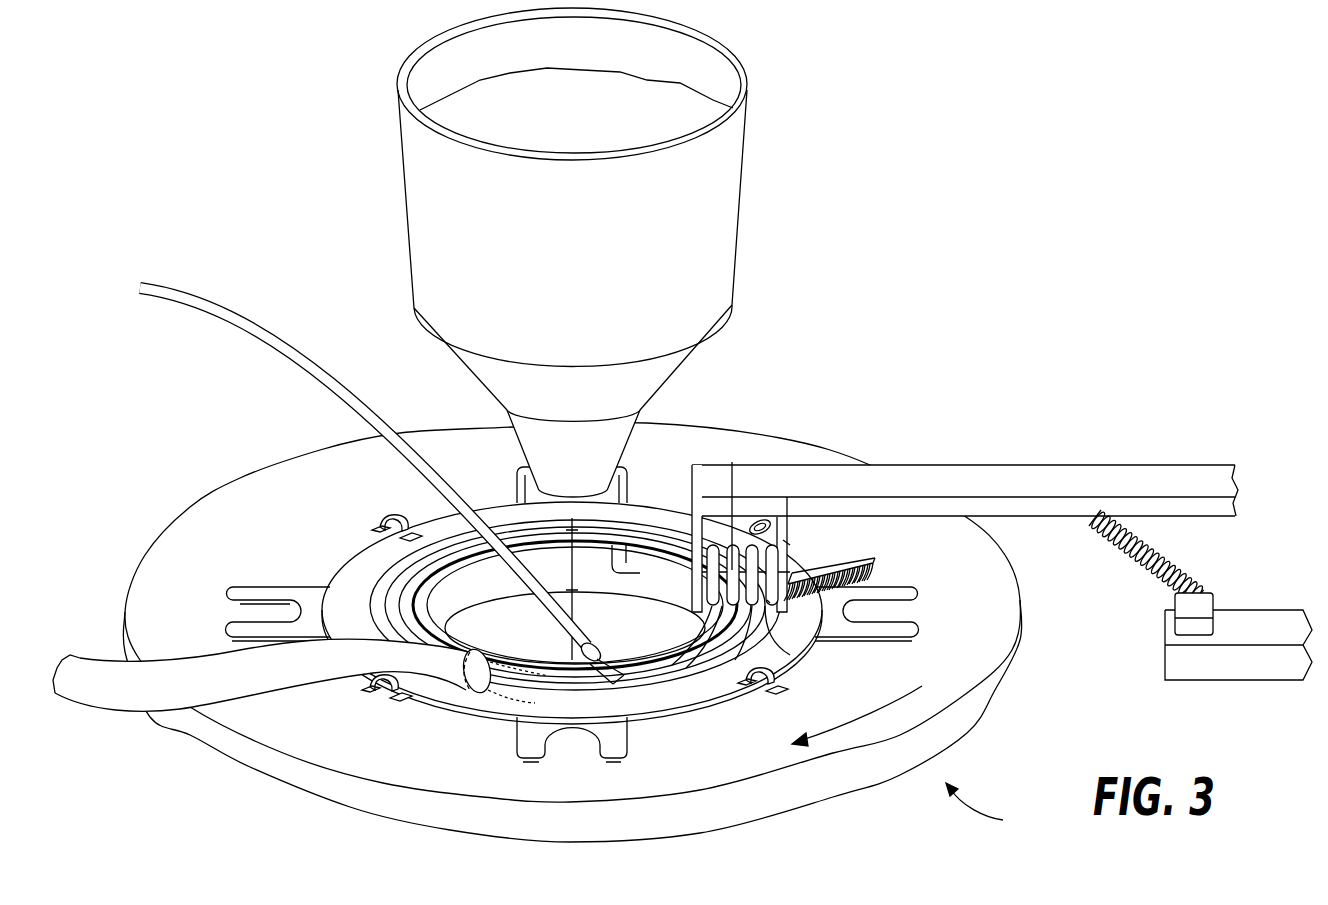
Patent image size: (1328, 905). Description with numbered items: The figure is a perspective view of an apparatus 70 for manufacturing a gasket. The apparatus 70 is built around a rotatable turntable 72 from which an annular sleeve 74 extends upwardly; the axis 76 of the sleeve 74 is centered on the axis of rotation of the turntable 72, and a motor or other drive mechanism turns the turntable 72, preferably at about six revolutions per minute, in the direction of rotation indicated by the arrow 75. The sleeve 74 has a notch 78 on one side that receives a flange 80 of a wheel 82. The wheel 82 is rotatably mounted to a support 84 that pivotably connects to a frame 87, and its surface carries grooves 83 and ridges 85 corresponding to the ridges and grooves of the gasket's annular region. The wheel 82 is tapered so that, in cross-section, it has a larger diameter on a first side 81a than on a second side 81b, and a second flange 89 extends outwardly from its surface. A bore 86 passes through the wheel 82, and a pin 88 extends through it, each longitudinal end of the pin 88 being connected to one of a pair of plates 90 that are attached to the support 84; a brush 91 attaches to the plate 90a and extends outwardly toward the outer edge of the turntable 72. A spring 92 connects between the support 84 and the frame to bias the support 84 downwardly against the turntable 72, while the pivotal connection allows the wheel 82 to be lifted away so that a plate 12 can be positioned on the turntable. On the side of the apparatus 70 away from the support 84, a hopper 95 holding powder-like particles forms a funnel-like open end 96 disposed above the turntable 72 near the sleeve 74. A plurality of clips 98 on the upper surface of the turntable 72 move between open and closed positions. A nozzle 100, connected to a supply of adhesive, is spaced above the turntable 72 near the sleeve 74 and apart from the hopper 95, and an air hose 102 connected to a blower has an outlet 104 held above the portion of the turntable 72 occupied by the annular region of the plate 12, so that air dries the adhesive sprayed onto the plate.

The plate 12 is at (647, 707).
The apparatus 70 is at (992, 813).
The rotatable turntable 72 is at (978, 672).
The annular sleeve 74 is at (487, 596).
The arrow 75 is at (857, 723).
The axis 76 is at (516, 550).
The notch 78 is at (612, 545).
The flange 80 is at (940, 547).
The first side 81a is at (720, 553).
The second side 81b is at (800, 573).
The wheel 82 is at (753, 583).
The grooves 83 is at (740, 548).
The support 84 is at (1003, 478).
The ridges 85 is at (733, 500).
The bore 86 is at (767, 600).
The frame 87 is at (1250, 662).
The pin 88 is at (797, 580).
The second flange 89 is at (773, 600).
The plates 90 is at (697, 583).
The plate 90a is at (783, 540).
The brush 91 is at (873, 583).
The spring 92 is at (1178, 563).
The hopper 95 is at (545, 252).
The funnel-like open end 96 is at (532, 440).
The clips 98 is at (392, 517).
The nozzle 100 is at (575, 663).
The air hose 102 is at (270, 672).
The outlet 104 is at (458, 686).